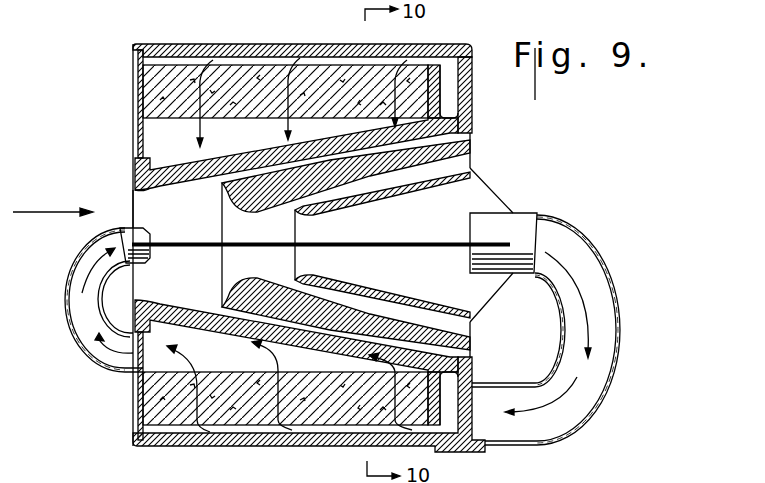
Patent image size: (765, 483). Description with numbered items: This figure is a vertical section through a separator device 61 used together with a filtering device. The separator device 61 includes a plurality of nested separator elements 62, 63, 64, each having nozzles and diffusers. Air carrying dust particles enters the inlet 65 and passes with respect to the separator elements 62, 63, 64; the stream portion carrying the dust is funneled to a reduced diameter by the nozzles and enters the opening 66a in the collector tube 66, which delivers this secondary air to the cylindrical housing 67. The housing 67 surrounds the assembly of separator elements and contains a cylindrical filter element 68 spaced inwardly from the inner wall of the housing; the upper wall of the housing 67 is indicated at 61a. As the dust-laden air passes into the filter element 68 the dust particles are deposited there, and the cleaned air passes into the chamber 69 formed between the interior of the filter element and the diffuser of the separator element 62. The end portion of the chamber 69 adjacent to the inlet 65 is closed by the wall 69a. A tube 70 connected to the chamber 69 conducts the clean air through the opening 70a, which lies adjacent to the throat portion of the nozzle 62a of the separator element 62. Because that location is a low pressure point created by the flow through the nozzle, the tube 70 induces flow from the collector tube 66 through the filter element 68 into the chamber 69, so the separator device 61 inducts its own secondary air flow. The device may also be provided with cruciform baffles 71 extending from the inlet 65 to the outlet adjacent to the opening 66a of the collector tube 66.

The separator device 61 is at (508, 162).
The top wall of housing 61a is at (331, 56).
The separator element 62 is at (168, 188).
The nozzle 62a is at (142, 191).
The separator element 63 is at (276, 193).
The separator element 64 is at (343, 207).
The inlet 65 is at (133, 198).
The collector tube 66 is at (600, 394).
The opening 66a is at (468, 257).
The cylindrical housing 67 is at (451, 44).
The cylindrical filter element 68 is at (322, 418).
The chamber 69 is at (252, 152).
The wall 69a is at (142, 128).
The tube 70 is at (68, 330).
The opening 70a is at (152, 253).
The baffles 71 is at (485, 194).